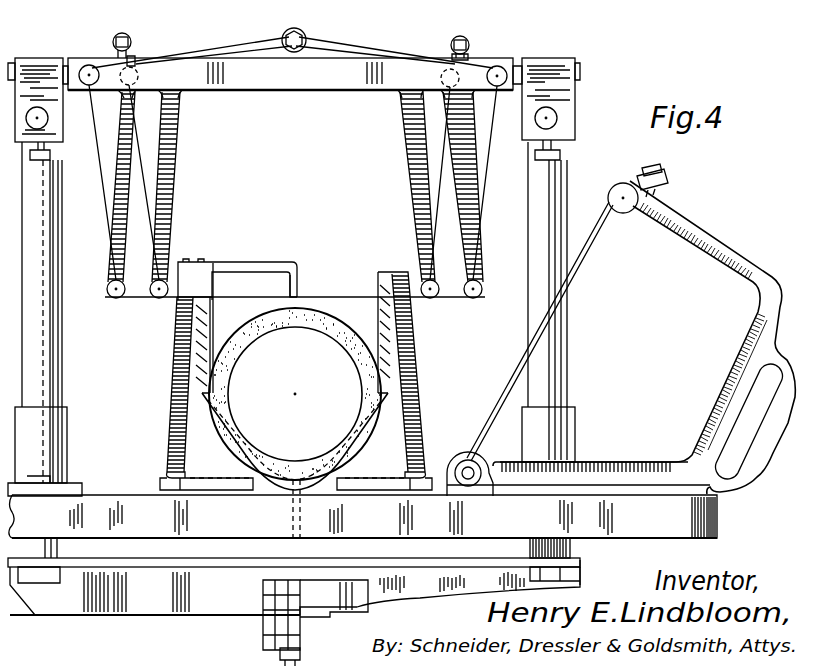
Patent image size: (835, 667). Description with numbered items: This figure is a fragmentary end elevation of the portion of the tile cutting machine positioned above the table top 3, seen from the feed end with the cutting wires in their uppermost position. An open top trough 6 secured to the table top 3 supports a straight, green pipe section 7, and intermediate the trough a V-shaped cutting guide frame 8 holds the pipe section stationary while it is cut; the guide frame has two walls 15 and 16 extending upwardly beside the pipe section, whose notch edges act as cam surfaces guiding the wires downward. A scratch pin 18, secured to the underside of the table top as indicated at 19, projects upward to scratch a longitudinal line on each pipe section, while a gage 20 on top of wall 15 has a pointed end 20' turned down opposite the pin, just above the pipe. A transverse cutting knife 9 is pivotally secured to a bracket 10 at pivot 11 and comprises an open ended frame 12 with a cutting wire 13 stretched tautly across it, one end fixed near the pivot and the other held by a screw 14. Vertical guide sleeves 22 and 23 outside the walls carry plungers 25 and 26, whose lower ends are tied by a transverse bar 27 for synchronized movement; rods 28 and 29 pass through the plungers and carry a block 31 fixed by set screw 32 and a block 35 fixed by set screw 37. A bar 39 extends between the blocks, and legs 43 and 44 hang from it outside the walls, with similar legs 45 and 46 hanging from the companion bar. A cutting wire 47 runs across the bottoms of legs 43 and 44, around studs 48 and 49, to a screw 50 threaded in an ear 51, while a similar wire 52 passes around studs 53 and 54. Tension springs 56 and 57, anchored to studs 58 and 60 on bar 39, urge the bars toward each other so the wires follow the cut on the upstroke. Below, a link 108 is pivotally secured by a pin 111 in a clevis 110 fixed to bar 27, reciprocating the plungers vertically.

The table top 3 is at (696, 513).
The open top trough 6 is at (242, 449).
The pipe section 7 is at (345, 343).
The cutting guide frame 8 is at (155, 446).
The transverse cutting knife 9 is at (740, 254).
The bracket 10 is at (485, 456).
The pivot 11 is at (463, 462).
The open ended frame 12 is at (633, 460).
The cutting wire 13 is at (588, 243).
The screw 14 is at (668, 190).
The wall 15 is at (176, 378).
The wall 16 is at (412, 365).
The scratch pin 18 is at (308, 512).
The securing point of scratch pin 19 is at (335, 553).
The gage 20 is at (237, 265).
The pointed end 20' is at (313, 274).
The vertical guide sleeve 22 is at (65, 418).
The guide sleeve 23 is at (575, 413).
The plunger 25 is at (58, 337).
The plunger 26 is at (568, 327).
The transverse bar 27 is at (126, 615).
The rod 28 is at (40, 107).
The rod 29 is at (557, 118).
The block 31 is at (37, 58).
The set screw 32 is at (52, 155).
The block 35 is at (572, 94).
The set screw 37 is at (562, 153).
The bar 39 is at (250, 90).
The leg 43 is at (114, 231).
The leg 44 is at (482, 232).
The leg 45 is at (168, 160).
The leg 46 is at (428, 213).
The cutting wire 47 is at (102, 200).
The stud 48 is at (88, 64).
The stud 49 is at (500, 65).
The screw 50 is at (307, 34).
The ear 51 is at (253, 45).
The cutting wire 52 is at (453, 294).
The stud 53 is at (140, 76).
The stud 54 is at (461, 78).
The tension spring 56 is at (122, 33).
The tension spring 57 is at (466, 40).
The stud 58 is at (133, 58).
The stud 60 is at (452, 56).
The link 108 is at (290, 643).
The clevis 110 is at (270, 590).
The pin 111 is at (344, 598).